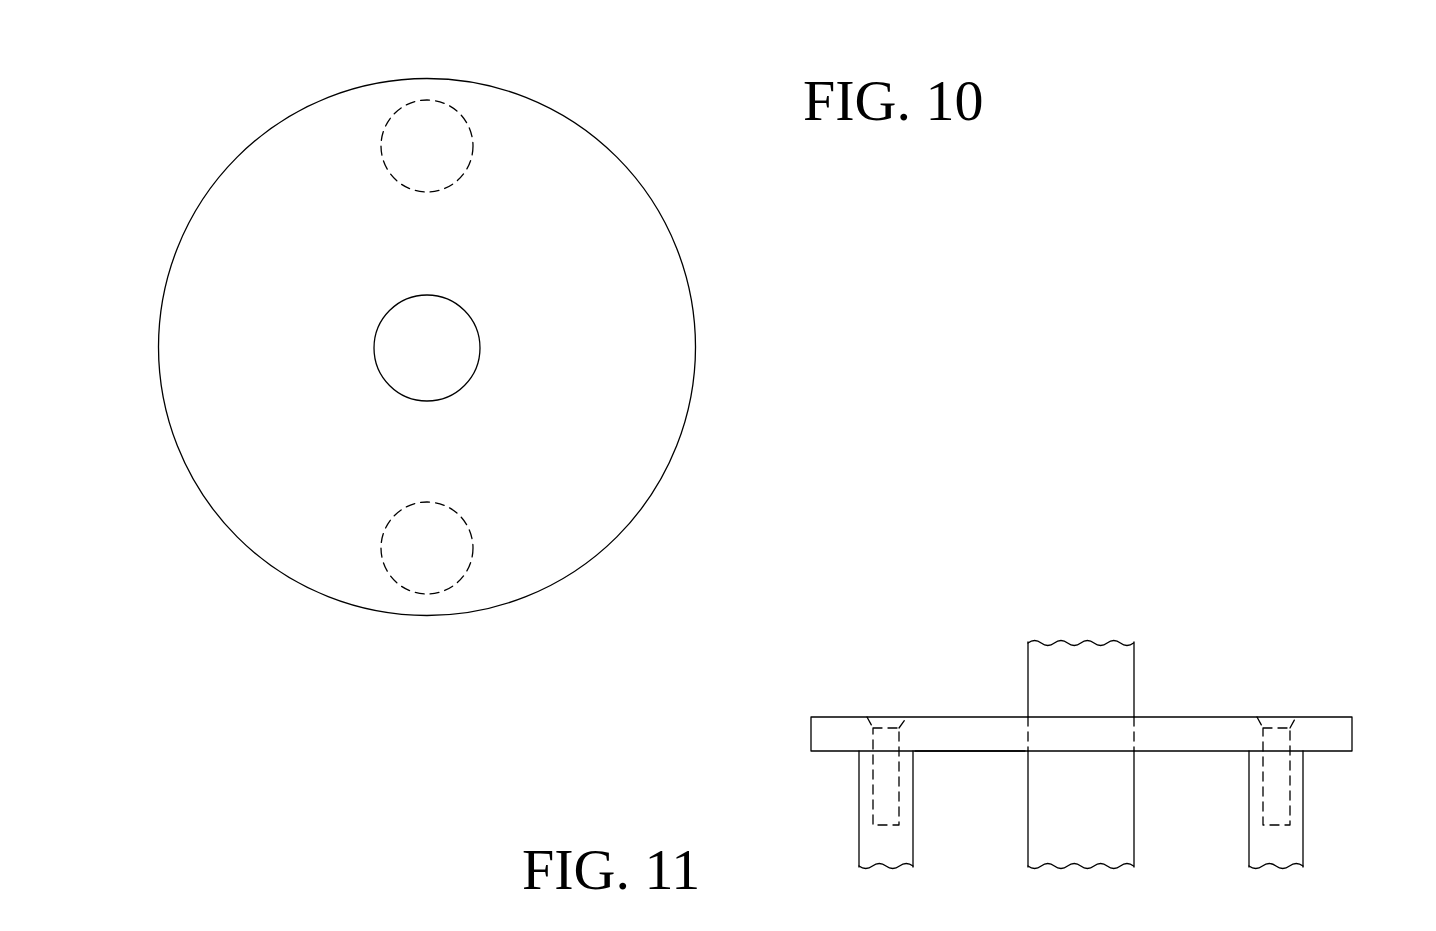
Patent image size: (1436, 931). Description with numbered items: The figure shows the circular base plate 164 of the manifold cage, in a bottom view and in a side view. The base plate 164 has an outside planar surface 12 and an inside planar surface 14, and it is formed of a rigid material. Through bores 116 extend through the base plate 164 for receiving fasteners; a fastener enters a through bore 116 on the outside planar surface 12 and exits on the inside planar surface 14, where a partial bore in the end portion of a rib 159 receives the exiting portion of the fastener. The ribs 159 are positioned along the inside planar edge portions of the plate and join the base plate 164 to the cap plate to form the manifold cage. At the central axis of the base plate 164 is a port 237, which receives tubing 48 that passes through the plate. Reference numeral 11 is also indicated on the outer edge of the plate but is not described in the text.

In FIG. 10, the outer edge of plate 11 is at (678, 435).
In FIG. 10, the outside planar surface 12 is at (237, 422).
In FIG. 11, the outside planar surface 12 is at (948, 702).
In FIG. 11, the inside planar surface 14 is at (944, 765).
In FIG. 11, the tubing 48 is at (1102, 782).
In FIG. 11, the through bores 116 is at (887, 725).
In FIG. 10, the ribs 159 is at (405, 137).
In FIG. 11, the ribs 159 is at (865, 788).
In FIG. 10, the base plate 164 is at (626, 122).
In FIG. 11, the base plate 164 is at (913, 672).
In FIG. 10, the port 237 is at (395, 320).
In FIG. 11, the port 237 is at (1027, 755).